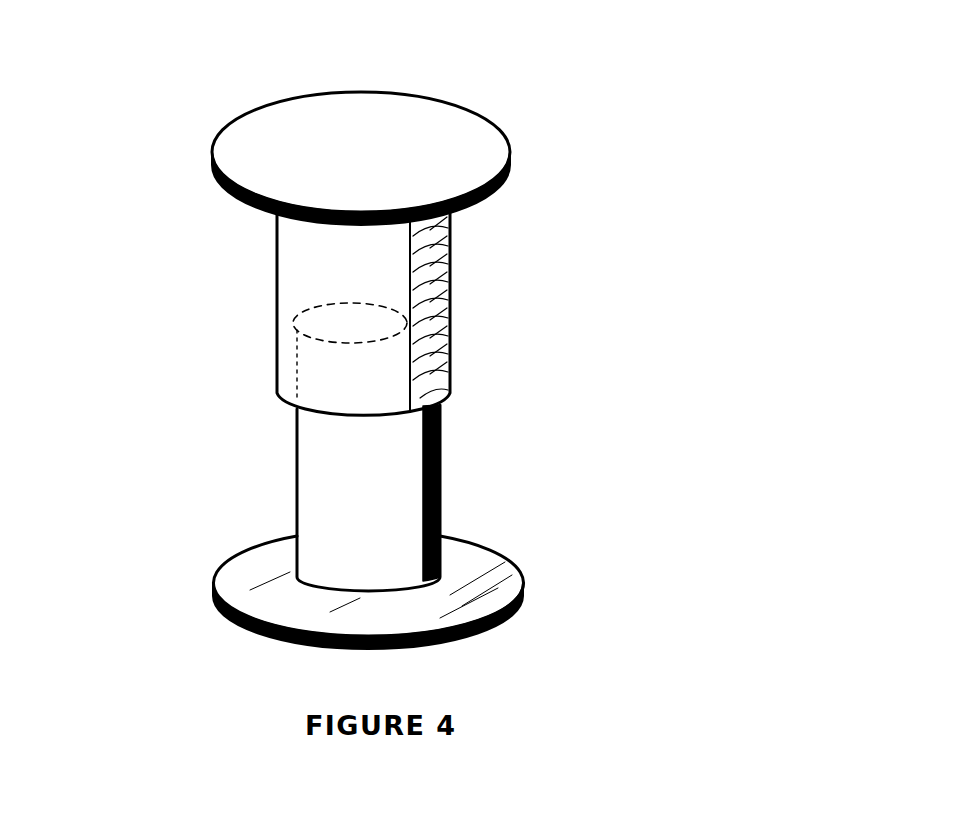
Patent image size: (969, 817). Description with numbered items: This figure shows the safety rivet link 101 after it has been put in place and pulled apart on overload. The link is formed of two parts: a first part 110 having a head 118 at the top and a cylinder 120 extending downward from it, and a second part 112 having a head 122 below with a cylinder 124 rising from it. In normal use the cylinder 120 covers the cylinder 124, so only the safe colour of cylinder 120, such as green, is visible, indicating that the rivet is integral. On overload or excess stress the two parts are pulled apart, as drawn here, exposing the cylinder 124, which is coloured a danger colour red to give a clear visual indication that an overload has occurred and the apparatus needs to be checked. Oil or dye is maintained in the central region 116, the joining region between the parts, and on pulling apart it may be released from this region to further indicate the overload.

The safety rivet link 101 is at (165, 174).
The head 118 is at (393, 127).
The first part 110 is at (433, 243).
The cylinder 120 is at (430, 340).
The cylinder 124 is at (442, 503).
The central region 116 is at (330, 483).
The head 122 is at (478, 593).
The part 112 is at (522, 595).